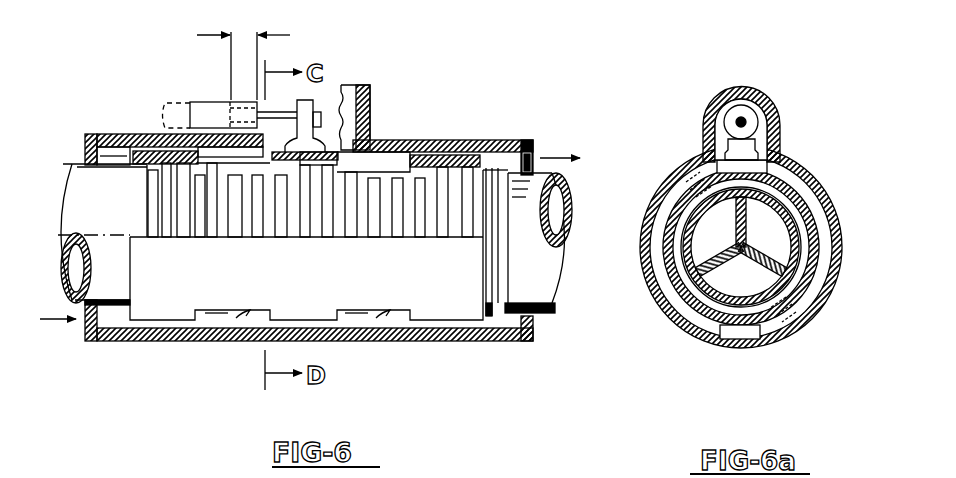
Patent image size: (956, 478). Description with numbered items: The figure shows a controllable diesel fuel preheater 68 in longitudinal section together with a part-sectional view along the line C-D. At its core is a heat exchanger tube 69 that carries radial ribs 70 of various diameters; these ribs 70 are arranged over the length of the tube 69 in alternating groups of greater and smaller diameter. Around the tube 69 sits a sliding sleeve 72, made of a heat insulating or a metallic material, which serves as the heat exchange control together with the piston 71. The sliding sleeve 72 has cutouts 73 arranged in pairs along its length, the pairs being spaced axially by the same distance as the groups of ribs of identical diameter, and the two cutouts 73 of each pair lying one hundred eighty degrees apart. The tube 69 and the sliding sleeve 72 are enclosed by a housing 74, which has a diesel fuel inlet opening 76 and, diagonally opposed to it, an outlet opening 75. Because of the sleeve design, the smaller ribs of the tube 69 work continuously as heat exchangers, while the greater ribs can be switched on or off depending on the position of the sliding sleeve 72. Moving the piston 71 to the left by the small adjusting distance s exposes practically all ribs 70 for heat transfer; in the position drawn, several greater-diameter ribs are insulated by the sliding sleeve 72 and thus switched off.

In FIG. 6, the controllable diesel fuel preheater 68 is at (146, 344).
In FIG. 6, the heat exchanger tube 69 is at (78, 178).
In FIG. 6, the radial ribs 70 is at (163, 190).
In FIG. 6, the piston 71 is at (200, 102).
In FIG. 6a, the piston 71 is at (763, 118).
In FIG. 6, the sliding sleeve 72 is at (427, 157).
In FIG. 6a, the sliding sleeve 72 is at (800, 317).
In FIG. 6, the cutouts 73 is at (375, 163).
In FIG. 6a, the cutouts 73 is at (748, 325).
In FIG. 6, the housing 74 is at (488, 140).
In FIG. 6a, the housing 74 is at (807, 170).
In FIG. 6, the outlet opening 75 is at (533, 155).
In FIG. 6, the inlet opening 76 is at (84, 327).